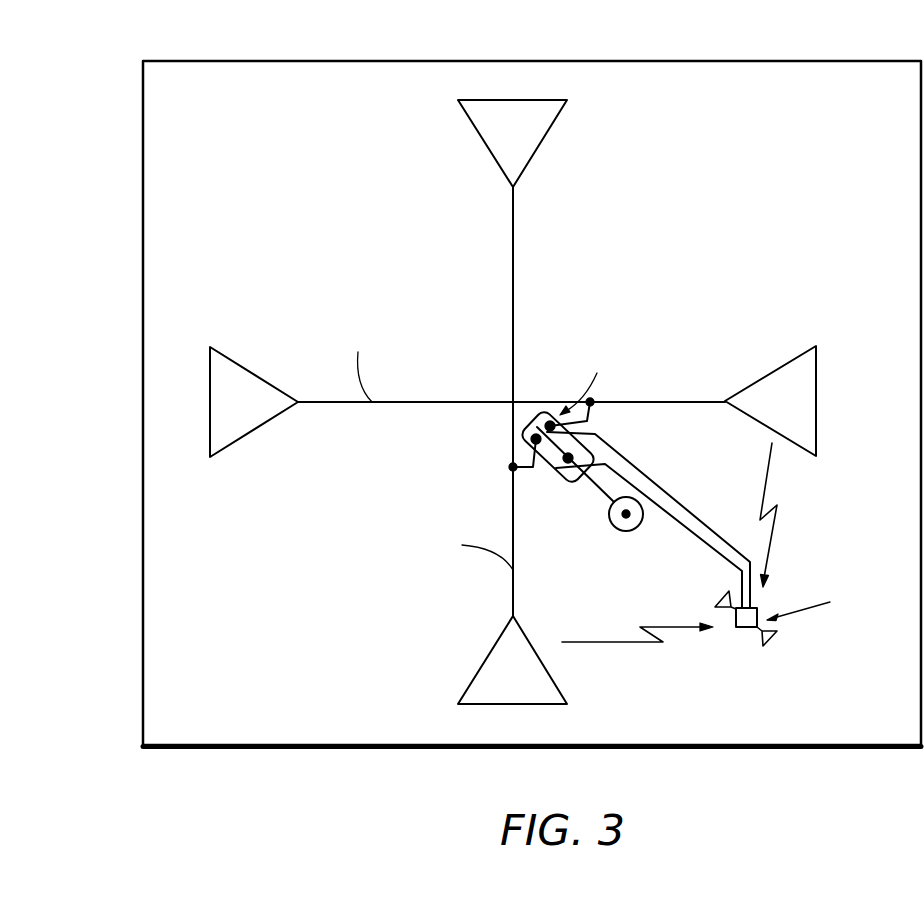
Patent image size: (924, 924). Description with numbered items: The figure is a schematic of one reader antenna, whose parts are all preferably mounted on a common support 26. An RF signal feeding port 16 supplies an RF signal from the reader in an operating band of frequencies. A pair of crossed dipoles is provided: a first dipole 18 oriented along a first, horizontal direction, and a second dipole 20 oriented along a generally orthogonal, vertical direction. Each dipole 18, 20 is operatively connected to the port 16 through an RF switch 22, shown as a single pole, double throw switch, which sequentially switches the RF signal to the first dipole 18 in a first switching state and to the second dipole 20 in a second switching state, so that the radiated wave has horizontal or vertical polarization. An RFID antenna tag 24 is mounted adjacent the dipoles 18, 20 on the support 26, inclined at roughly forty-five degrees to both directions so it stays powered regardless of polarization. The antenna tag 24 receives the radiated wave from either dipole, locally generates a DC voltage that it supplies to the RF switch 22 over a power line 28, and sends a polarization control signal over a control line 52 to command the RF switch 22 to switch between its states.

The common support 26 is at (698, 60).
The second dipole 20 is at (513, 258).
The first dipole 18 is at (333, 403).
The RF switch 22 is at (559, 474).
The RF signal feeding port 16 is at (613, 521).
The control line 52 is at (687, 509).
The power line 28 is at (693, 534).
The RFID antenna tag 24 is at (743, 628).